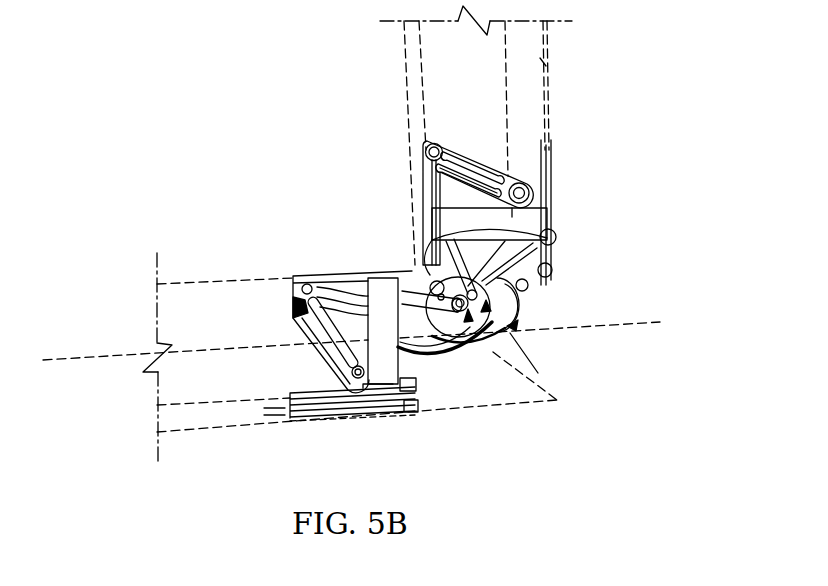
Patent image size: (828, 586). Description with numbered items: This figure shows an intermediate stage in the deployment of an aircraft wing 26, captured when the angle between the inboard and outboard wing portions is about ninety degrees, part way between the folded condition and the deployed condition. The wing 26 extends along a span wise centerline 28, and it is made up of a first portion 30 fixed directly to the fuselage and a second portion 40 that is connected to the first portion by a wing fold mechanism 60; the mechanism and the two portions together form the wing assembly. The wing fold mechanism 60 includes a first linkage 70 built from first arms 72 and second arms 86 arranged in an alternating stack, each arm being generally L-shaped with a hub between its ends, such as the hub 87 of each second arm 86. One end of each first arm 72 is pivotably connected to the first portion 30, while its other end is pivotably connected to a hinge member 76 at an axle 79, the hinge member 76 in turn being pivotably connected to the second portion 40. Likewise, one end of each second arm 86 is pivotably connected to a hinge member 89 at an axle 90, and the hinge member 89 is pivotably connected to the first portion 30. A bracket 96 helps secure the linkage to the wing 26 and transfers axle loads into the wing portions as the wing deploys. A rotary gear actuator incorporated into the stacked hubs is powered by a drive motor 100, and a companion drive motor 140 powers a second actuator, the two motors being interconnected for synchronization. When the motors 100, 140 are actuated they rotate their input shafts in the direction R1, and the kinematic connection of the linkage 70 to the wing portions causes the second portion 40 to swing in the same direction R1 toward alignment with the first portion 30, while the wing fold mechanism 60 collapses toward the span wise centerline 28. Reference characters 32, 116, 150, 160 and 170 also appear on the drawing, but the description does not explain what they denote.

The wing 26 is at (219, 450).
The span wise centerline 28 is at (655, 323).
The first portion 30 is at (261, 413).
The frame member 32 is at (544, 30).
The second portion 40 is at (546, 62).
The wing fold mechanism 60 is at (566, 334).
The first linkage 70 is at (497, 303).
The first arm 72 is at (430, 200).
The hinge member 76 is at (486, 162).
The axle 79 is at (548, 160).
The second arm 86 is at (412, 321).
The hub 87 is at (428, 273).
The hinge member 89 is at (298, 313).
The axle 90 is at (356, 385).
The bracket 96 is at (298, 292).
The drive motor 100 is at (548, 240).
The aperture 116 is at (437, 158).
The drive motor 140 is at (570, 226).
The fastener 150 is at (436, 288).
The bushing 160 is at (437, 281).
The belt 170 is at (477, 364).
The direction of rotation R1 is at (538, 373).